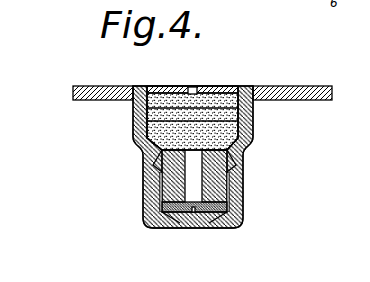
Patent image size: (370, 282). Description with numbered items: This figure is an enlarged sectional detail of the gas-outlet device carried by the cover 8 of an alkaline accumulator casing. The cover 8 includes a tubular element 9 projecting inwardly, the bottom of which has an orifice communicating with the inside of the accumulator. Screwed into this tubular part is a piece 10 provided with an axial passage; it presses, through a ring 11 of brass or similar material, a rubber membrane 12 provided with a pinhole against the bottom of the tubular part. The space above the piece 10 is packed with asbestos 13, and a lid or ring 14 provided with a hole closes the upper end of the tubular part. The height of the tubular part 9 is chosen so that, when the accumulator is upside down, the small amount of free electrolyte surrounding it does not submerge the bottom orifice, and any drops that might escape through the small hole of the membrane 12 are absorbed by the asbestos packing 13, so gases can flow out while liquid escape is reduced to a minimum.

The cover 8 is at (290, 86).
The tubular element 9 is at (244, 160).
The piece 10 is at (148, 150).
The ring 11 is at (222, 212).
The membrane 12 is at (241, 221).
The asbestos 13 is at (250, 120).
The lid or ring 14 is at (212, 86).